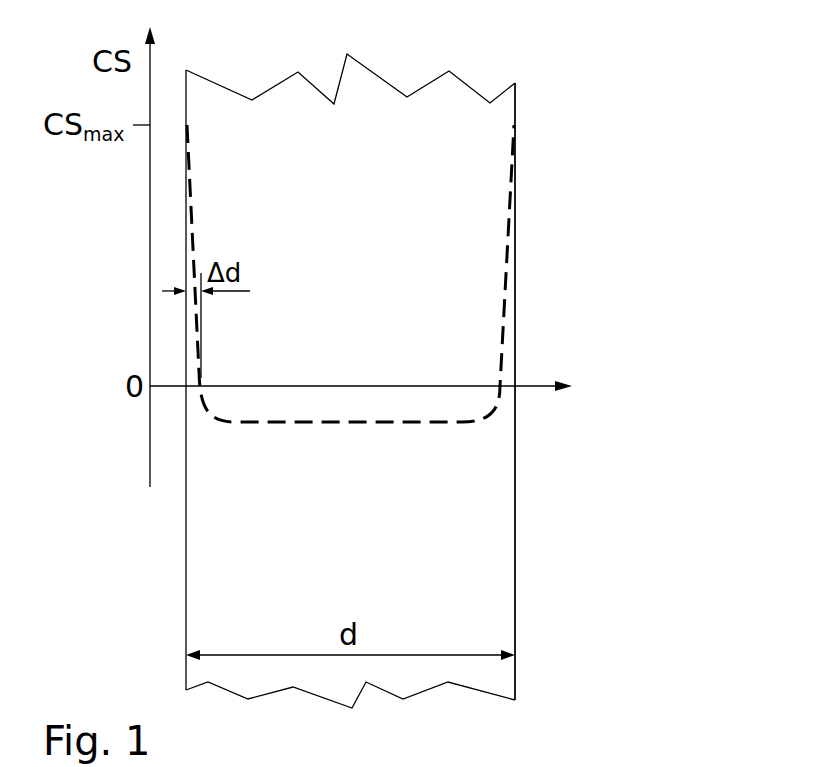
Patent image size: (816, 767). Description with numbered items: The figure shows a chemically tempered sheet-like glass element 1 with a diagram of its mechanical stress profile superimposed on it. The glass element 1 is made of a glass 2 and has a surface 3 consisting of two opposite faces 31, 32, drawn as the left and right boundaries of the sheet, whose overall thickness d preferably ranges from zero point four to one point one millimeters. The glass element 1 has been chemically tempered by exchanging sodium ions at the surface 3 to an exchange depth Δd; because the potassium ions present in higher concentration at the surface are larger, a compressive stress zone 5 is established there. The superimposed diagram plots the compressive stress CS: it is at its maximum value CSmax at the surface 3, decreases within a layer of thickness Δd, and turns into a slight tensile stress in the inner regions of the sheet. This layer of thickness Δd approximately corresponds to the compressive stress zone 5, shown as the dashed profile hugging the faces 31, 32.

The sheet-like glass element 1 is at (369, 355).
The glass 2 is at (284, 105).
The surface 3 is at (515, 330).
The face 31 is at (186, 598).
The face 32 is at (515, 542).
The compressive stress zone 5 is at (190, 342).